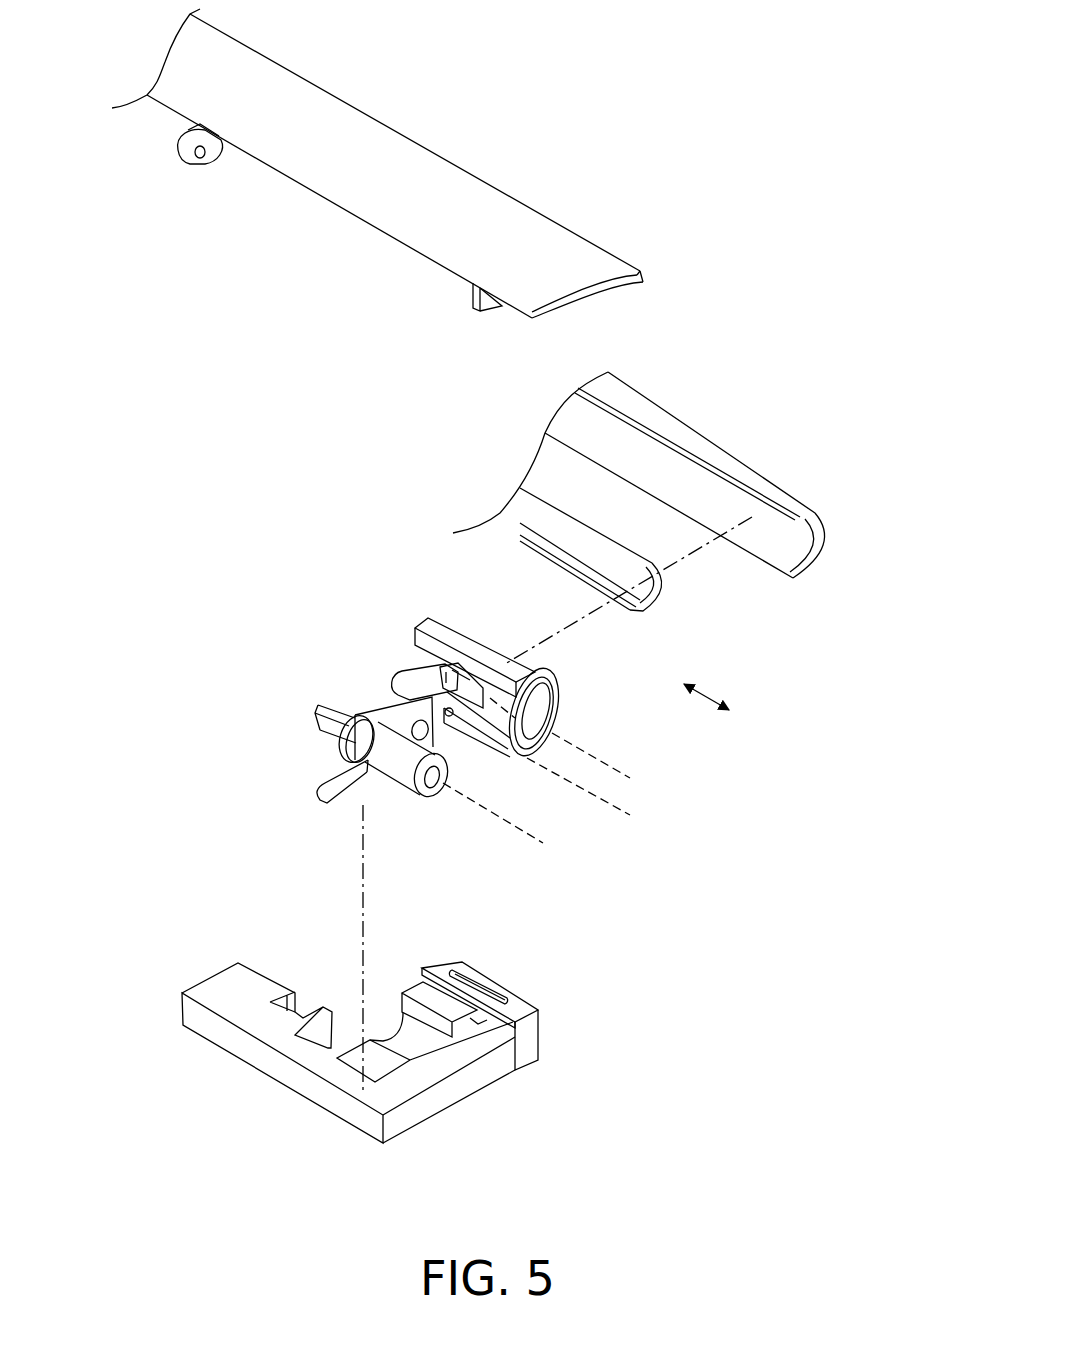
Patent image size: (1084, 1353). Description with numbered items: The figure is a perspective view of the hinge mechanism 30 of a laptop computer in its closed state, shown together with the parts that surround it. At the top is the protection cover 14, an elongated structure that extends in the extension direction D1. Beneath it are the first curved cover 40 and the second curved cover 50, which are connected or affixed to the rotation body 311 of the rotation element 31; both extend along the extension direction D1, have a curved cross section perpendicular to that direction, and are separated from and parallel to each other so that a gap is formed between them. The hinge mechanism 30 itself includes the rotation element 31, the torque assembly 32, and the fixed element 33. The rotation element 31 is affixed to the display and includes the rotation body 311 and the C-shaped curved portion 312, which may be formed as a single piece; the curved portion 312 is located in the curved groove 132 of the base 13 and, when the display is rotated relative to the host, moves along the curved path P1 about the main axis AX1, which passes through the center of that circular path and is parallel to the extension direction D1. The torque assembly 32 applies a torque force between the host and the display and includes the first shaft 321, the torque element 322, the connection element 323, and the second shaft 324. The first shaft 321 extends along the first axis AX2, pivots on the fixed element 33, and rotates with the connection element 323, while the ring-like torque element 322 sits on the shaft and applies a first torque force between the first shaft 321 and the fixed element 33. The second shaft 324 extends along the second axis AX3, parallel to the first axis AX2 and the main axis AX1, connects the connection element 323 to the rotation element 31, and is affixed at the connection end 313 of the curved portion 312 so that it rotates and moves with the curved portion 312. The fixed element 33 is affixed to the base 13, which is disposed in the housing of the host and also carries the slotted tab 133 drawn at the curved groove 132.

The protection cover 14 is at (382, 140).
The first curved cover 40 is at (673, 501).
The second curved cover 50 is at (662, 588).
The hinge mechanism 30 is at (201, 462).
The rotation element 31 is at (490, 683).
The rotation body 311 is at (452, 622).
The curved portion 312 is at (548, 664).
The connection end 313 is at (487, 740).
The torque assembly 32 is at (344, 741).
The first shaft 321 is at (443, 793).
The torque element 322 is at (350, 758).
The connection element 323 is at (377, 722).
The second shaft 324 is at (440, 668).
The fixed element 33 is at (343, 813).
The base 13 is at (401, 1019).
The curved groove 132 is at (503, 993).
The slotted tab 133 is at (436, 967).
The curved path P1 is at (557, 697).
The extension direction D1 is at (717, 685).
The main axis AX1 is at (592, 754).
The first axis AX2 is at (486, 938).
The second axis AX3 is at (611, 803).